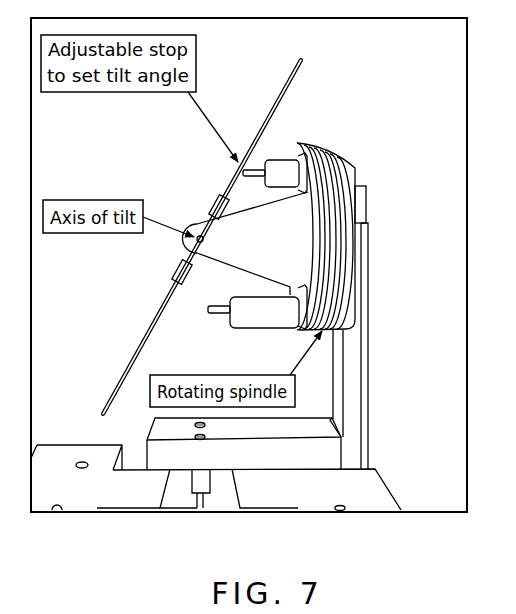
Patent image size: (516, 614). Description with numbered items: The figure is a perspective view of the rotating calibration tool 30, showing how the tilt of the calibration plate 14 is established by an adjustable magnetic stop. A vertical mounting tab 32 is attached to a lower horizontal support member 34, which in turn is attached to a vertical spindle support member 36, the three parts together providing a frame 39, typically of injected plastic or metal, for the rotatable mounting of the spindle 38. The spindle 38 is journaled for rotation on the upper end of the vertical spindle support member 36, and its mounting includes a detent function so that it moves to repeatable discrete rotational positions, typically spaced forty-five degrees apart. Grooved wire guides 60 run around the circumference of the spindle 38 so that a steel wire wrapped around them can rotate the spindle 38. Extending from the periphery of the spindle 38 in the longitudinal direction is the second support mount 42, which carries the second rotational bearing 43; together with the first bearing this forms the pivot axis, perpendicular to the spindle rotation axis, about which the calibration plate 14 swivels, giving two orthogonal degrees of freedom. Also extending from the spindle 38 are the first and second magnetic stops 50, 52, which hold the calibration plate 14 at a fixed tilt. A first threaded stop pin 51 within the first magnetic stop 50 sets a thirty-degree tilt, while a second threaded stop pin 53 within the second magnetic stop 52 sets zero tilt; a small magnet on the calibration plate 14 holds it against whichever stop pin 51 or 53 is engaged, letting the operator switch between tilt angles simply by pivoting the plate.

The calibration plate 14 is at (276, 100).
The rotating calibration tool 30 is at (346, 450).
The vertical mounting tab 32 is at (201, 487).
The lower horizontal support member 34 is at (305, 452).
The vertical spindle support member 36 is at (364, 380).
The spindle 38 is at (356, 164).
The frame 39 is at (375, 345).
The second support mount 42 is at (297, 246).
The second rotational bearing 43 is at (186, 245).
The first magnetic stop 50 is at (292, 157).
The first threaded stop pin 51 is at (280, 163).
The second magnetic stop 52 is at (252, 311).
The second threaded stop pin 53 is at (217, 315).
The grooved wire guides 60 is at (331, 144).